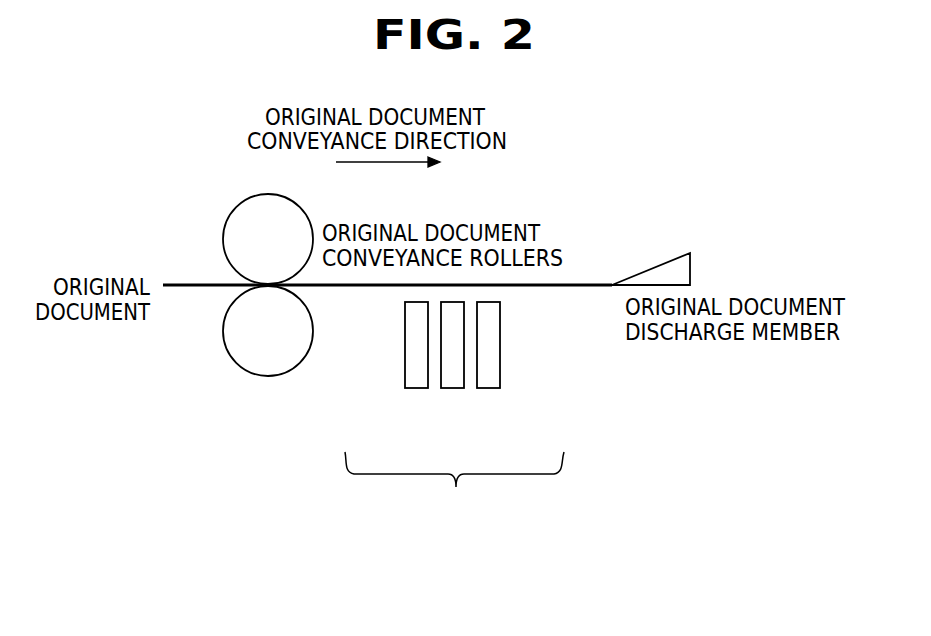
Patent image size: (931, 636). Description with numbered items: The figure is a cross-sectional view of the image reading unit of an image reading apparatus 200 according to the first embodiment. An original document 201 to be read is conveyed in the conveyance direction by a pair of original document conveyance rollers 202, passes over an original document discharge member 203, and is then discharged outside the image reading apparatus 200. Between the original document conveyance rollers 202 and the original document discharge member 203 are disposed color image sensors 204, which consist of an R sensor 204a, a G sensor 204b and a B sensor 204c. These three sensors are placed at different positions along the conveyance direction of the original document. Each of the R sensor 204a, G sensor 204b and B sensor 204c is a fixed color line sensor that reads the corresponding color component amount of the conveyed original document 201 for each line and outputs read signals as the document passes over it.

The image reading apparatus 200 is at (702, 439).
The original document 201 is at (185, 285).
The original document conveyance rollers 202 is at (300, 206).
The original document discharge member 203 is at (692, 272).
The color image sensors 204 is at (456, 449).
The R sensor 204a is at (487, 390).
The G sensor 204b is at (452, 390).
The B sensor 204c is at (415, 390).